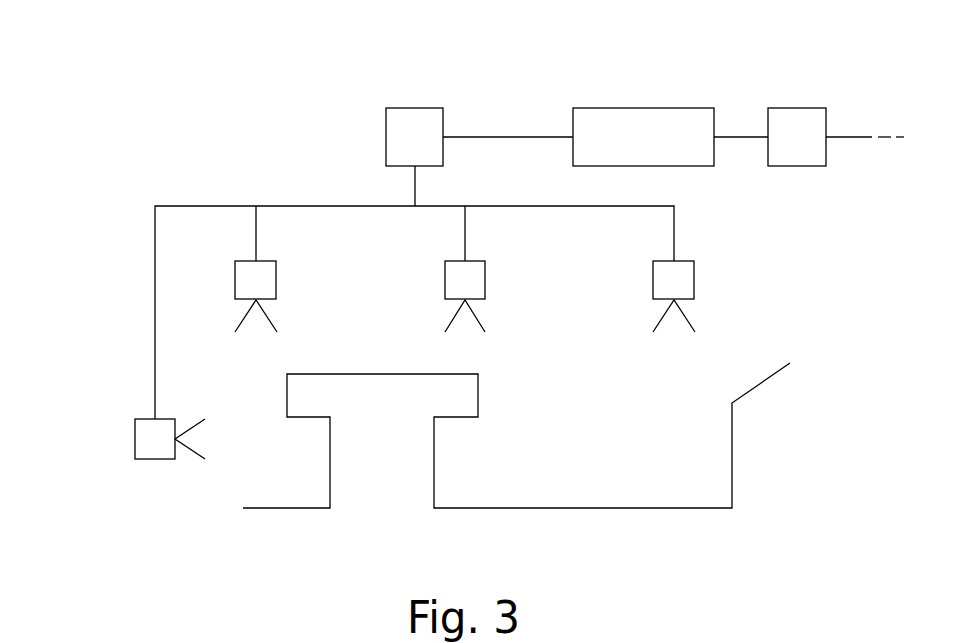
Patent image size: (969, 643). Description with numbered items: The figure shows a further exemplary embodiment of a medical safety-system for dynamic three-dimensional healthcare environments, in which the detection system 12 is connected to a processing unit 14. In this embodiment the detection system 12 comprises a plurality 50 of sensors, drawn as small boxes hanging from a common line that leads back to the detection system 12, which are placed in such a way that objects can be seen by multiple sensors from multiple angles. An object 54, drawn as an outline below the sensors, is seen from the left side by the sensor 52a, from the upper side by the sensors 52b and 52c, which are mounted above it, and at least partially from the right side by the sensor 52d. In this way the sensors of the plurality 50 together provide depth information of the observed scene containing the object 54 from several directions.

The detection system 12 is at (384, 92).
The processing unit 14 is at (643, 108).
The plurality of sensors 50 is at (141, 269).
The sensor 52a is at (133, 439).
The sensor 52b is at (277, 281).
The sensor 52c is at (485, 280).
The sensor 52d is at (694, 280).
The object 54 is at (399, 431).